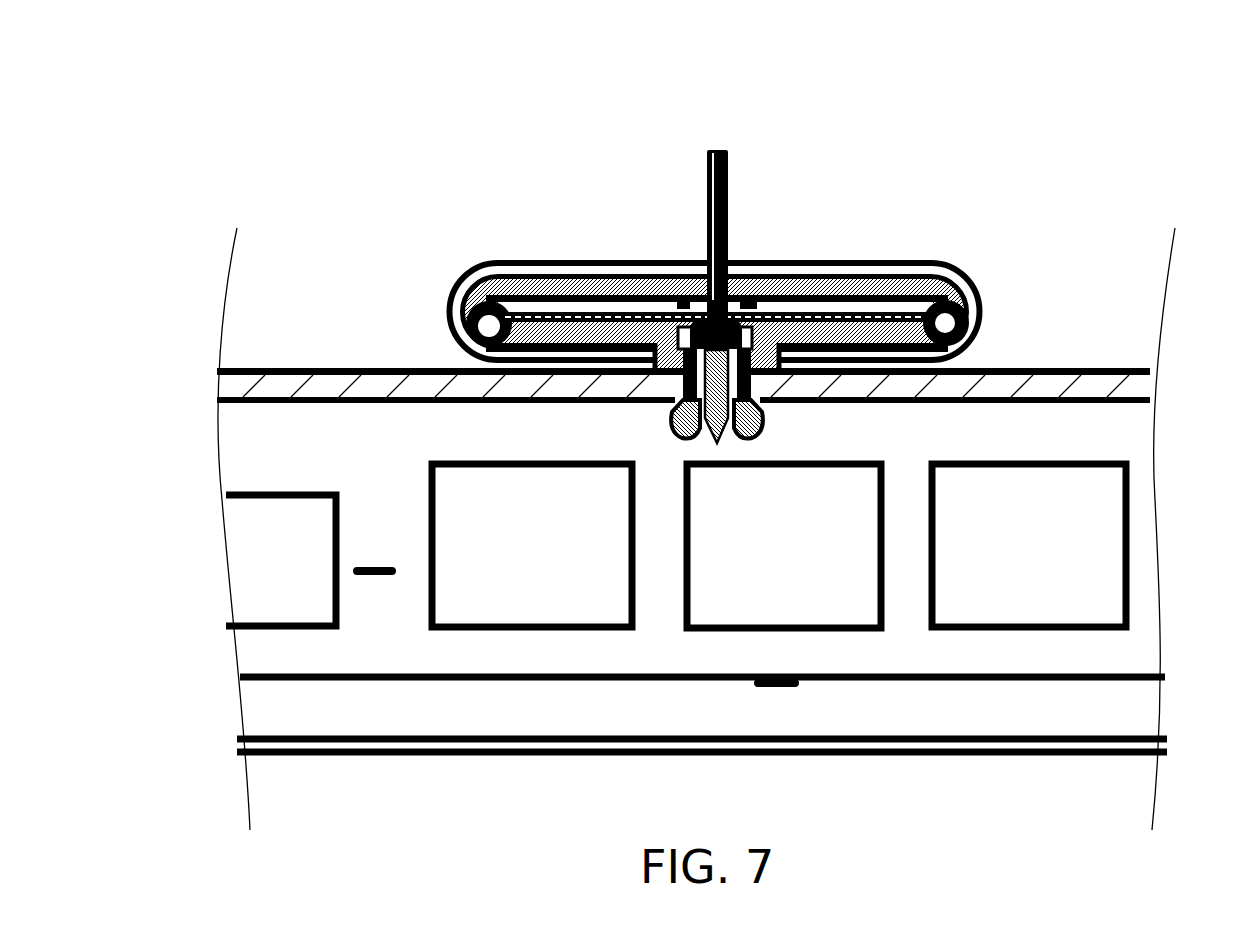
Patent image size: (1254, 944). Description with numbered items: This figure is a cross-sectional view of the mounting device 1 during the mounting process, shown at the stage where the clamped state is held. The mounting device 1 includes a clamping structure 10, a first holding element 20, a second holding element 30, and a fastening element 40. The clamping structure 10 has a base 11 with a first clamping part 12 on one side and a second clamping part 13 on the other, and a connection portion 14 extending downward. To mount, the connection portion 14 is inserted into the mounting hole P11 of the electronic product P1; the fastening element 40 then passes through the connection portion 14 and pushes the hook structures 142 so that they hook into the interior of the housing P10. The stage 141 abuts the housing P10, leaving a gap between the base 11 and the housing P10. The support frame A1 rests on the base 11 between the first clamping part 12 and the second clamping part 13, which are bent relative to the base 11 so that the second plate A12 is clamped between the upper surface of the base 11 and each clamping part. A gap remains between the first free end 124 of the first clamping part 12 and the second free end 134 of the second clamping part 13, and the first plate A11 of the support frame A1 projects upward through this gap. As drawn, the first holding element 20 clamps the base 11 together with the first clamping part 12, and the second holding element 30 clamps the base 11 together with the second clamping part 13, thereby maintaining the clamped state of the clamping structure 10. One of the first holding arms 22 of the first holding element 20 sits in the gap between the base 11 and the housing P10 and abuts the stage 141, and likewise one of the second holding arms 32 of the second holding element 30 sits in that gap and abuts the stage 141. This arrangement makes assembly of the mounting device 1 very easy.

The mounting device 1 is at (1028, 263).
The clamping structure 10 is at (218, 170).
The base 11 is at (1195, 520).
The first clamping part 12 is at (478, 320).
The second clamping part 13 is at (1075, 325).
The connection portion 14 is at (450, 226).
The stage 141 is at (690, 338).
The hook structures 142 is at (985, 808).
The first holding element 20 is at (513, 262).
The first holding arm 22 is at (500, 362).
The second holding element 30 is at (835, 263).
The second holding arm 32 is at (858, 347).
The fastening element 40 is at (718, 443).
The first free end 124 is at (652, 263).
The second free end 134 is at (775, 263).
The support frame A1 is at (734, 216).
The first plate A11 is at (704, 228).
The second plate A12 is at (583, 263).
The electronic product P1 is at (287, 368).
The housing P10 is at (345, 368).
The mounting hole P11 is at (688, 402).